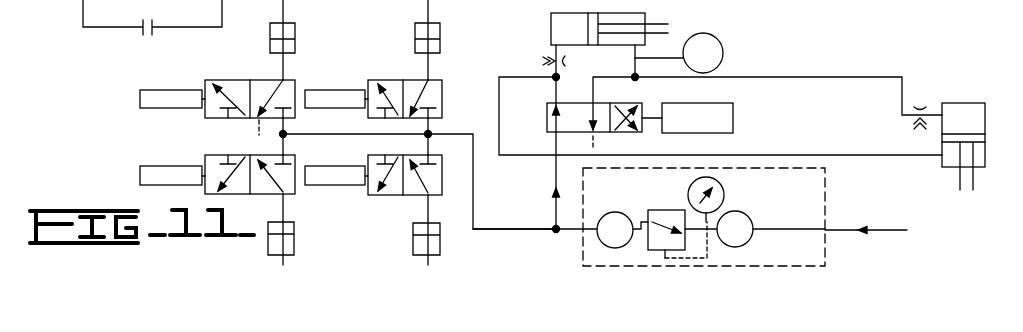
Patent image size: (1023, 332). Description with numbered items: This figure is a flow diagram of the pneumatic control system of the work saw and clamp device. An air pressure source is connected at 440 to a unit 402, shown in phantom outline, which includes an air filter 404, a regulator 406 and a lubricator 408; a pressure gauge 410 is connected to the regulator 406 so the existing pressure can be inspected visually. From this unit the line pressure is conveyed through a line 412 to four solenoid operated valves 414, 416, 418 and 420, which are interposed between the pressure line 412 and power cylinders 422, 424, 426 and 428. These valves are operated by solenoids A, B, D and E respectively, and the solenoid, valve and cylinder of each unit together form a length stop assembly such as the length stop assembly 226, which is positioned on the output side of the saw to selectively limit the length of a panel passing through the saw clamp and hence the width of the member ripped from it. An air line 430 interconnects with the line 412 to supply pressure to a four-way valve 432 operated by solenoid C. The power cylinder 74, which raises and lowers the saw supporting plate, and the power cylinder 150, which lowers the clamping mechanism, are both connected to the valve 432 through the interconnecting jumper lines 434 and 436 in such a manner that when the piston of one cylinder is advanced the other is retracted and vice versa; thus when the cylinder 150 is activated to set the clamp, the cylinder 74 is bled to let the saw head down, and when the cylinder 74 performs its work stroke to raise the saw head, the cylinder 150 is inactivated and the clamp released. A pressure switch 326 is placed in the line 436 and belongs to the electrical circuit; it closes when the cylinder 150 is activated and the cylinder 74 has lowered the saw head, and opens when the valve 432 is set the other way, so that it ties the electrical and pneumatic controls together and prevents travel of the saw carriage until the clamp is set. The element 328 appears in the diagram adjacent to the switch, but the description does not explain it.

The motor contact switch 328 is at (123, 17).
The power cylinder 150 is at (558, 22).
The power cylinder 426 is at (296, 31).
The power cylinder 422 is at (440, 35).
The solenoid operated valve 418 is at (285, 80).
The solenoid operated valve 414 is at (440, 90).
The solenoid operated valve 420 is at (297, 155).
The solenoid operated valve 416 is at (452, 152).
The power cylinder 428 is at (295, 230).
The power cylinder 424 is at (433, 237).
The length stop assembly 226 is at (367, 227).
The pressure switch 326 is at (717, 42).
The jumper line 436 is at (755, 75).
The power cylinder 74 is at (963, 102).
The four-way valve 432 is at (602, 132).
The jumper line 434 is at (710, 153).
The air line 430 is at (555, 175).
The line 412 is at (540, 227).
The unit 402 is at (575, 235).
The lubricator 408 is at (623, 222).
The regulator 406 is at (677, 212).
The pressure gauge 410 is at (713, 183).
The air filter 404 is at (733, 211).
The air pressure source connection 440 is at (835, 228).